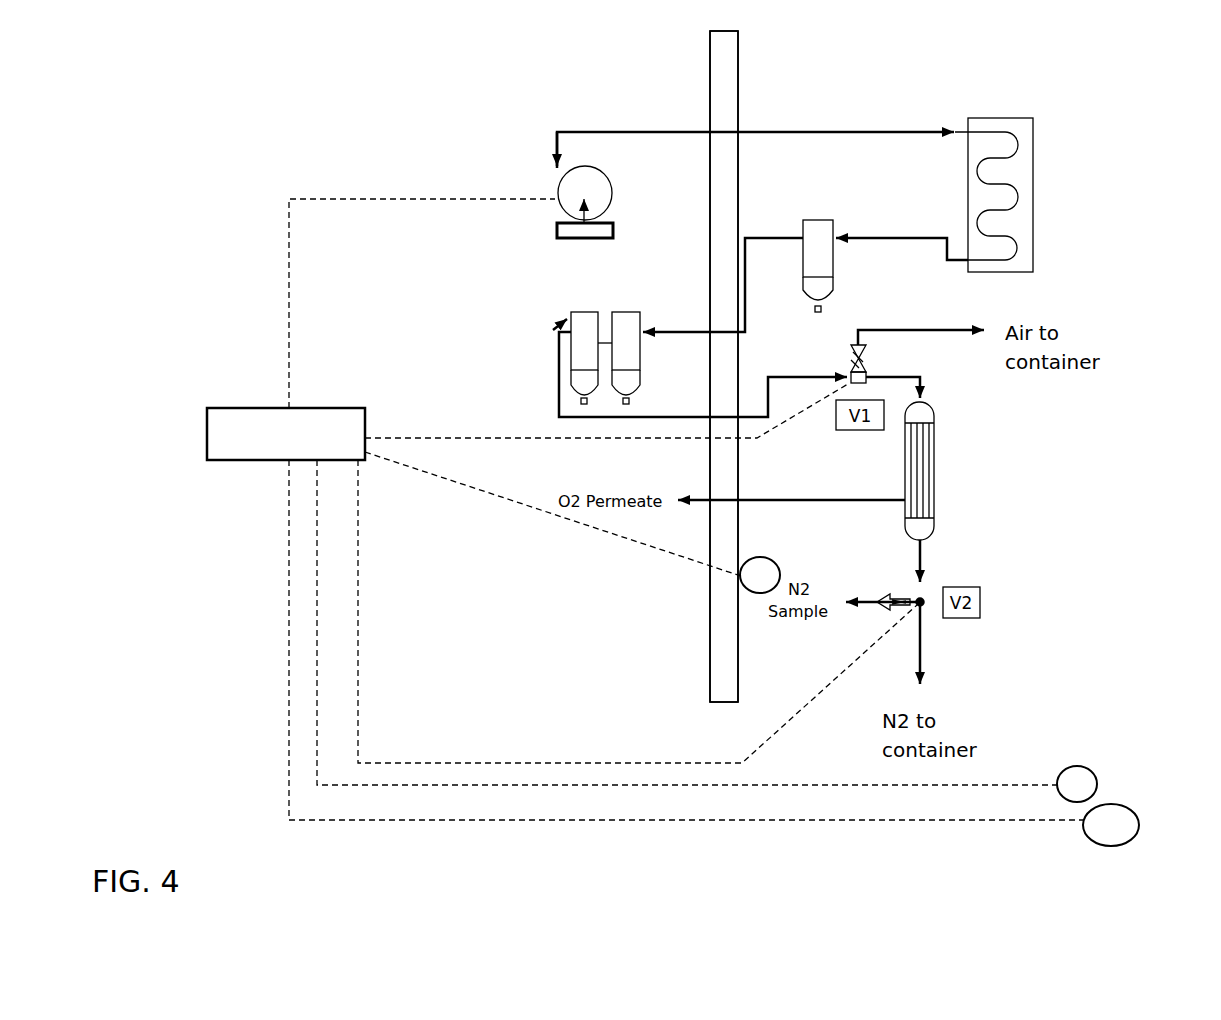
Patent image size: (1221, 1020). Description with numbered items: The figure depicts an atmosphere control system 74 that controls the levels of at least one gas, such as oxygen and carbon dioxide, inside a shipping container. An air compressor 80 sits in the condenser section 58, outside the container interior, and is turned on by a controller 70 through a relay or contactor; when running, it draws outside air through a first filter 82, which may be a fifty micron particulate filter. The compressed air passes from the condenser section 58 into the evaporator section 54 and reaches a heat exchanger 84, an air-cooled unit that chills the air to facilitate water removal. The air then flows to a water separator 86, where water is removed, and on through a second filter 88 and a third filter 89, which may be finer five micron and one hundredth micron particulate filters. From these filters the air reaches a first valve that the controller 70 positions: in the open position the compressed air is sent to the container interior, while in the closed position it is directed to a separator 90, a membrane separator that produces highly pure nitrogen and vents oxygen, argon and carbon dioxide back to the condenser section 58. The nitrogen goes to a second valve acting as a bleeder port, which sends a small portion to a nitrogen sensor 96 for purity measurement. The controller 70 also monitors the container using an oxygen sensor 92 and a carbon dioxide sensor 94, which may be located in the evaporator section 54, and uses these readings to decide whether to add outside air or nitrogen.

The atmosphere control system 74 is at (404, 70).
The condenser section 58 is at (651, 366).
The evaporator section 54 is at (787, 366).
The controller 70 is at (262, 405).
The air compressor 80 is at (556, 186).
The first filter 82 is at (555, 230).
The heat exchanger 84 is at (1034, 143).
The water separator 86 is at (817, 252).
The second filter 88 is at (619, 343).
The third filter 89 is at (579, 343).
The separator 90 is at (939, 471).
The oxygen sensor 92 is at (1083, 765).
The carbon dioxide sensor 94 is at (1142, 826).
The nitrogen sensor 96 is at (752, 558).